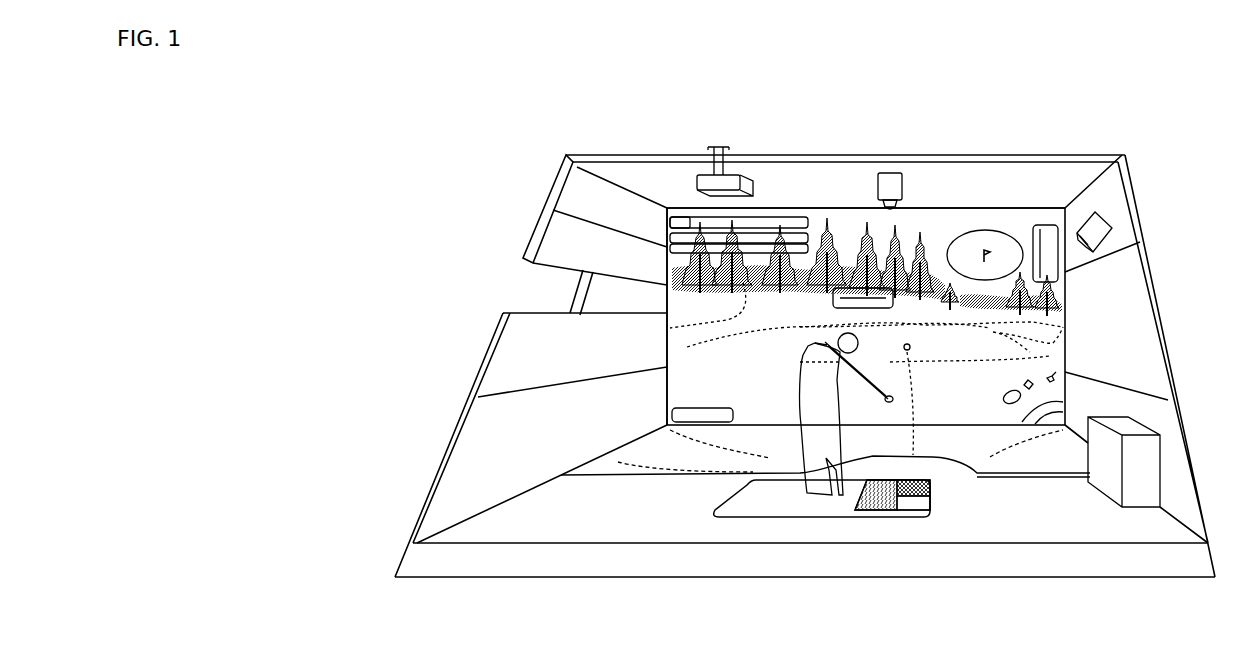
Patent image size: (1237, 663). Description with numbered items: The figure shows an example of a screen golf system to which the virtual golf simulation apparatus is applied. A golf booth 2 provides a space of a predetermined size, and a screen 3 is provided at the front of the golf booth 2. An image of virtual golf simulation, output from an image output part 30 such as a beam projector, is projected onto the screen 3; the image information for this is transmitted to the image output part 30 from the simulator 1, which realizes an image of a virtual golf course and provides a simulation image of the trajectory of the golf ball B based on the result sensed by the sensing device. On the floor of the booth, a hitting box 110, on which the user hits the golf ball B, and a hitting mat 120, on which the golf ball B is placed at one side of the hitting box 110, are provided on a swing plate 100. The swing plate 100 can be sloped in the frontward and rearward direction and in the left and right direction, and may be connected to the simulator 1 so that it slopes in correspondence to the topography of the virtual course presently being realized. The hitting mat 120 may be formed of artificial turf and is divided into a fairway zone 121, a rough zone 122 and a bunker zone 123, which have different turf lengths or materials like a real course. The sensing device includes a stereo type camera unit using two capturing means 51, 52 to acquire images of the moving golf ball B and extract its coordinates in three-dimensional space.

The simulator 1 is at (1130, 427).
The golf booth 2 is at (528, 203).
The screen 3 is at (1077, 347).
The image output part 30 is at (750, 184).
The capturing means 51 is at (1102, 225).
The capturing means 52 is at (891, 172).
The swing plate 100 is at (757, 530).
The hitting box 110 is at (734, 497).
The hitting mat 120 is at (946, 502).
The fairway zone 121 is at (866, 512).
The rough zone 122 is at (933, 485).
The bunker zone 123 is at (912, 504).
The golf ball B is at (911, 349).